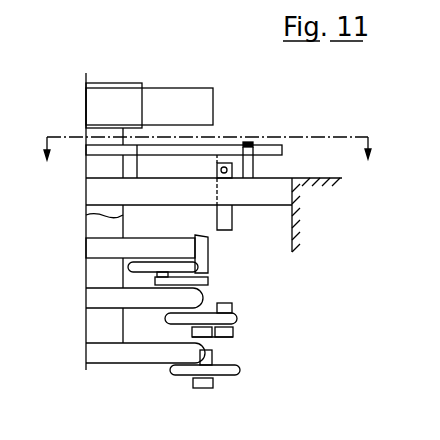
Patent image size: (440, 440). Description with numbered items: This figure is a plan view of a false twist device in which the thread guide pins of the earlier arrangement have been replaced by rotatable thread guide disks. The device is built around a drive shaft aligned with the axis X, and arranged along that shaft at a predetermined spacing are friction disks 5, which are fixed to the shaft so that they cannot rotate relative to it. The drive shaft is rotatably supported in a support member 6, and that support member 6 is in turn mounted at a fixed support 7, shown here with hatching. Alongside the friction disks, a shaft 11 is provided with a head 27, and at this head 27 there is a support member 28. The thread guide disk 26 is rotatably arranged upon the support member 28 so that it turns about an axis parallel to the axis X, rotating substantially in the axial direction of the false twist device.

The axis X is at (87, 80).
The friction disk 5 is at (123, 353).
The support member 6 is at (275, 193).
The fixed support 7 is at (310, 203).
The shaft 11 is at (223, 310).
The thread guide disk 26 is at (198, 322).
The head 27 is at (235, 332).
The support member 28 is at (207, 335).